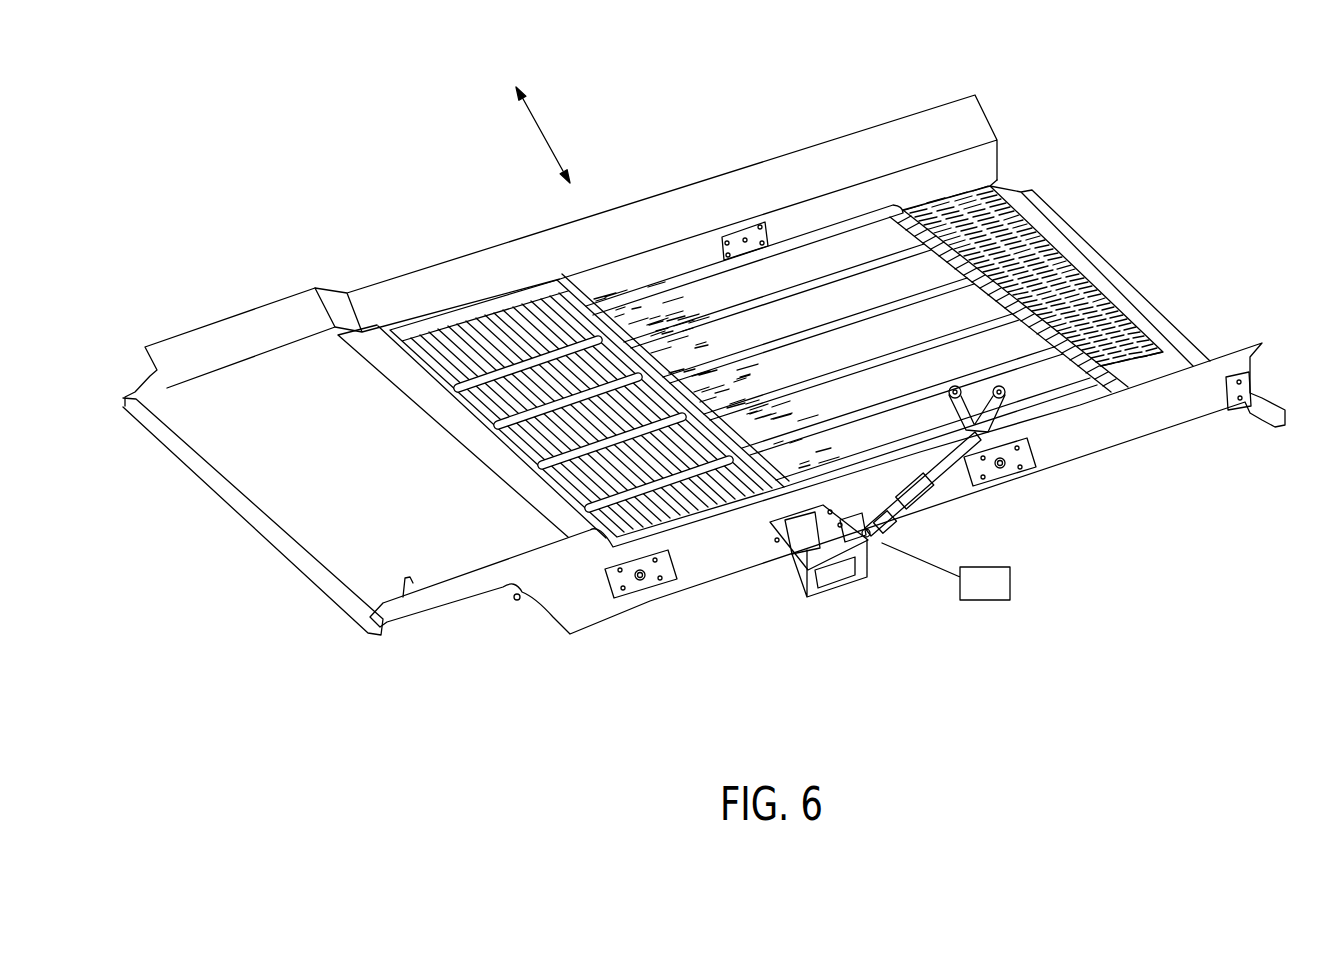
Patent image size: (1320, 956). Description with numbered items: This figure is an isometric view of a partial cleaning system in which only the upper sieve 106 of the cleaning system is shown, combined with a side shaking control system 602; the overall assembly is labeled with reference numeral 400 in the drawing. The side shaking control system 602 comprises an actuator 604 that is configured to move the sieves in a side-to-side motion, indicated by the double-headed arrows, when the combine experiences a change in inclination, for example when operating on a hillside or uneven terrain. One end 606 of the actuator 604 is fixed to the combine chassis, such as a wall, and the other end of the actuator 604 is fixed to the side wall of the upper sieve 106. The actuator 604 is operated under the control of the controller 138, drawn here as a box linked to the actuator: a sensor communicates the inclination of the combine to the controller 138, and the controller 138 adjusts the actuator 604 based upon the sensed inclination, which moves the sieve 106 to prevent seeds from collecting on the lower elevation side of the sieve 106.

The trailer bed assembly 400 is at (1097, 120).
The upper sieve 106 is at (993, 287).
The side shaking control system 602 is at (1025, 505).
The actuator 604 is at (932, 507).
The one end of the actuator 606 is at (983, 421).
The controller 138 is at (1010, 587).